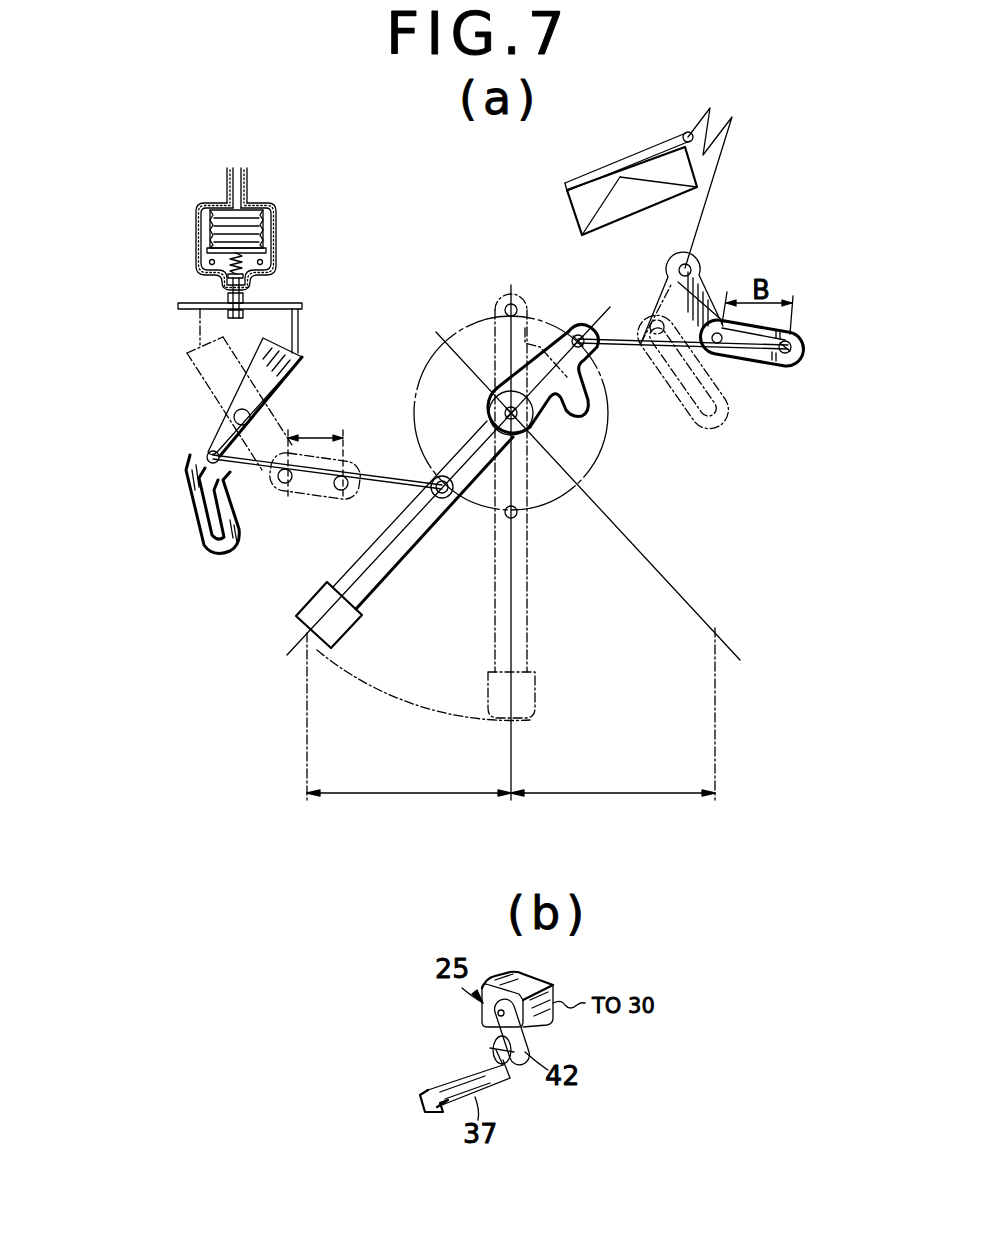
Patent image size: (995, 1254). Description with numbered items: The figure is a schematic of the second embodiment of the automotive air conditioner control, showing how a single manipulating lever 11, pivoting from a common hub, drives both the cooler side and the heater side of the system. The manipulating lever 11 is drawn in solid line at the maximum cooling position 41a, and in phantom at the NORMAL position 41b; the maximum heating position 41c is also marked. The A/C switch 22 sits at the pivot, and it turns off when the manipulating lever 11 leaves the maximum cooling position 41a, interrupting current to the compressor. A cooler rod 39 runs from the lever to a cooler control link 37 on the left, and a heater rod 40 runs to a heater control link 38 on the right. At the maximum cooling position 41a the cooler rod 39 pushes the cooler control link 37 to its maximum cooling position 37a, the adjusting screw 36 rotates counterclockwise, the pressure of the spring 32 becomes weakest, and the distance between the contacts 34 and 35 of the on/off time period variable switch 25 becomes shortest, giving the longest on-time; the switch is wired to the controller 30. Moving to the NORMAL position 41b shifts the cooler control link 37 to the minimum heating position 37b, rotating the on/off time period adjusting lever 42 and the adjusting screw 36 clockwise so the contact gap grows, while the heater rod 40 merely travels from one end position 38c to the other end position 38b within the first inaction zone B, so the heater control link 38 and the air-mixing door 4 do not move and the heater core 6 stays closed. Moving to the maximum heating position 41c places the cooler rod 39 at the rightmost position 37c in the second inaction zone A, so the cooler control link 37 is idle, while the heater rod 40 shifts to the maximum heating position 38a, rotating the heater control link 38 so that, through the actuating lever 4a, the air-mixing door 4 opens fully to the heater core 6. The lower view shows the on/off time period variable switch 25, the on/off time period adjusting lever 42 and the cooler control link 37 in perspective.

The air-mixing door 4 is at (610, 168).
The actuating lever 4a is at (712, 196).
The heater core 6 is at (628, 196).
The manipulating lever 11 is at (365, 577).
The air conditioning (A/C) switch 22 is at (600, 418).
The on/off time period variable switch 25 is at (235, 244).
The controller connection 30 is at (237, 173).
The spring 32 is at (217, 272).
The contact 34 is at (262, 260).
The contact 35 is at (262, 288).
The adjusting screw 36 is at (228, 312).
The cooler control link 37 is at (277, 437).
The maximum cooling position 37a is at (212, 456).
The minimum heating position 37b is at (281, 503).
The rightmost position 37c is at (342, 507).
The heater control link 38 is at (705, 285).
The maximum heating position 38a is at (652, 303).
The leftmost position 38b is at (740, 360).
The end position 38c is at (805, 352).
The cooler rod 39 is at (380, 478).
The heater rod 40 is at (620, 346).
The maximum cooling position 41a is at (309, 736).
The NORMAL position 41b is at (511, 815).
The maximum heating position 41c is at (718, 734).
The on/off time period adjusting lever 42 is at (300, 303).